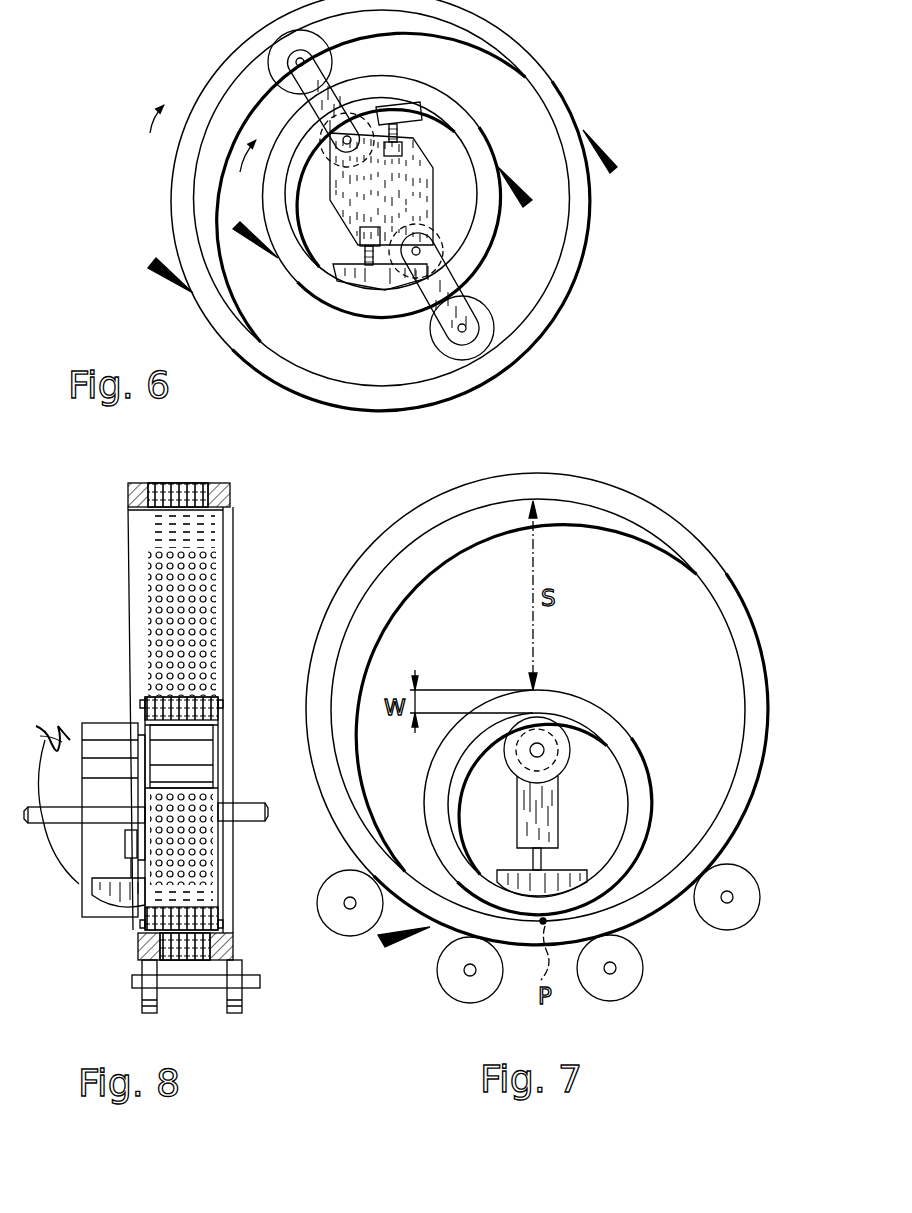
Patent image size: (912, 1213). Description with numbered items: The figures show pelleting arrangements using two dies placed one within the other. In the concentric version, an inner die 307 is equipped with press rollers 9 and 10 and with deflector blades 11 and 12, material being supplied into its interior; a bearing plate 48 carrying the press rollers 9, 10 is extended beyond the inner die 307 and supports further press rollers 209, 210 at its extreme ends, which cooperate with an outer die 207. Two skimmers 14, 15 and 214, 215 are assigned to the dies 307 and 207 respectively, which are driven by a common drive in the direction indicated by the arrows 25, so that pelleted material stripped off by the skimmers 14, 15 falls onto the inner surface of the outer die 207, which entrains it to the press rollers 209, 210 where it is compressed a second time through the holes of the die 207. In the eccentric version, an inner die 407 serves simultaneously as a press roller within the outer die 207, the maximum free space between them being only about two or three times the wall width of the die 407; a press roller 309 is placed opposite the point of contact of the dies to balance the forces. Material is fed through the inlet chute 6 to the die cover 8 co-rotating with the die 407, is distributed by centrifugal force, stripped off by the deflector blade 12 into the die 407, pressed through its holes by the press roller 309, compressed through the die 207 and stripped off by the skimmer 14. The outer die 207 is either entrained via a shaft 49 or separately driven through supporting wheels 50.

In FIG. 8, the inlet chute 6 is at (48, 736).
In FIG. 8, the die cover 8 is at (105, 736).
In FIG. 6, the press roller 9 is at (364, 122).
In FIG. 6, the press roller 10 is at (428, 252).
In FIG. 6, the deflector blade 11 is at (400, 104).
In FIG. 6, the deflector blade 12 is at (370, 276).
In FIG. 7, the deflector blade 12 is at (572, 876).
In FIG. 8, the deflector blade 12 is at (118, 898).
In FIG. 6, the skimmer 14 is at (246, 240).
In FIG. 7, the skimmer 14 is at (394, 942).
In FIG. 8, the skimmer 14 is at (236, 948).
In FIG. 6, the skimmer 15 is at (520, 178).
In FIG. 6, the direction of rotation arrow 25 is at (150, 132).
In FIG. 6, the bearing plate 48 is at (342, 196).
In FIG. 7, the bearing plate 48 is at (537, 823).
In FIG. 8, the shaft 49 is at (234, 830).
In FIG. 7, the supporting wheels 50 is at (350, 924).
In FIG. 8, the supporting wheels 50 is at (158, 1000).
In FIG. 6, the outer die 207 is at (532, 58).
In FIG. 7, the outer die 207 is at (670, 528).
In FIG. 8, the outer die 207 is at (218, 482).
In FIG. 6, the press roller 209 is at (278, 52).
In FIG. 6, the press roller 210 is at (481, 338).
In FIG. 6, the skimmer 214 is at (156, 276).
In FIG. 6, the skimmer 215 is at (613, 158).
In FIG. 6, the inner die 307 is at (452, 110).
In FIG. 7, the press roller 309 is at (548, 748).
In FIG. 7, the inner die 407 is at (618, 730).
In FIG. 8, the inner die 407 is at (215, 702).